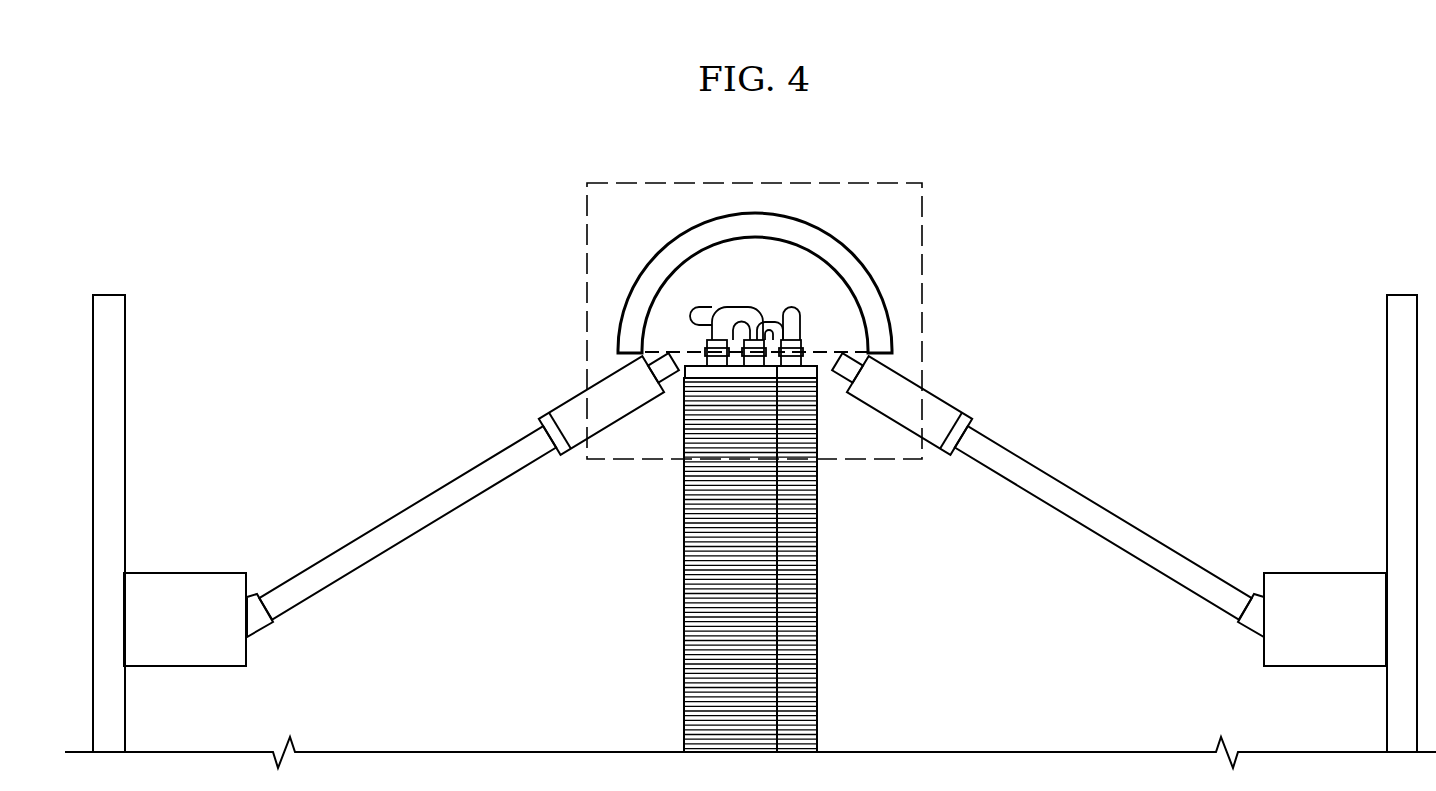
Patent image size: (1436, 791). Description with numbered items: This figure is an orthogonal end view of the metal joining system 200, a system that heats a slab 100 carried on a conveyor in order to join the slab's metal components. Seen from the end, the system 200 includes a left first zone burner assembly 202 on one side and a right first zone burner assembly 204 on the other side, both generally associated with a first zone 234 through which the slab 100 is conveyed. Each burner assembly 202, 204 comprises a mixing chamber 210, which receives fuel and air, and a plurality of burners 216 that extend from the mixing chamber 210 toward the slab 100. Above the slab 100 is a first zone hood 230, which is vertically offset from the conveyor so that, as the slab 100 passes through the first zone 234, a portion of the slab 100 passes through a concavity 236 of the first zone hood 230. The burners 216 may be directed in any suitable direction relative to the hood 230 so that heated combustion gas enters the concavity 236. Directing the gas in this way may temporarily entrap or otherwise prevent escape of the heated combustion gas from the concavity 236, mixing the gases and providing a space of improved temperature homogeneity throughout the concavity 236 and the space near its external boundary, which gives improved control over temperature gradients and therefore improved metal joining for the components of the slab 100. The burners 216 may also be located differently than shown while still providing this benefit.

The slab 100 is at (638, 589).
The metal joining system 200 is at (897, 135).
The left first zone burner assembly 202 is at (170, 562).
The right first zone burner assembly 204 is at (1341, 562).
The mixing chamber 210 is at (216, 572).
The burner 216 is at (570, 400).
The first zone hood 230 is at (662, 252).
The first zone 234 is at (675, 183).
The concavity 236 is at (826, 340).